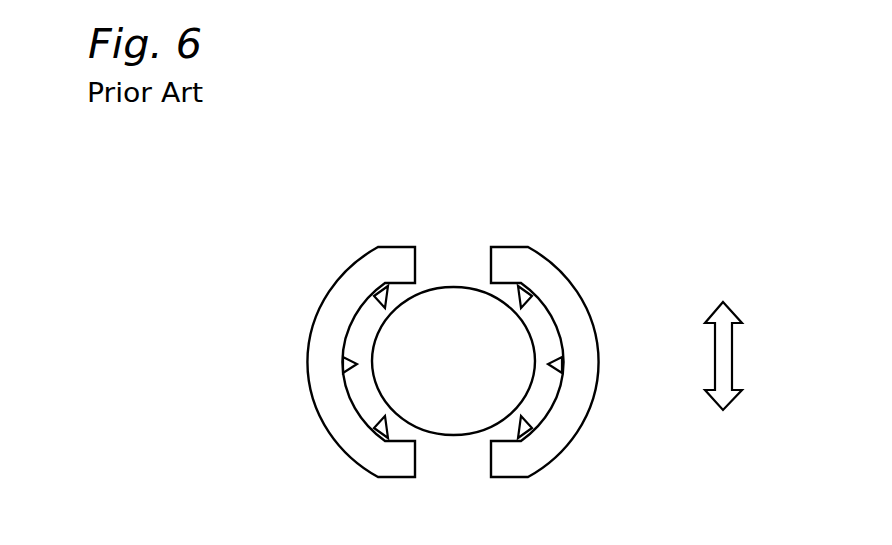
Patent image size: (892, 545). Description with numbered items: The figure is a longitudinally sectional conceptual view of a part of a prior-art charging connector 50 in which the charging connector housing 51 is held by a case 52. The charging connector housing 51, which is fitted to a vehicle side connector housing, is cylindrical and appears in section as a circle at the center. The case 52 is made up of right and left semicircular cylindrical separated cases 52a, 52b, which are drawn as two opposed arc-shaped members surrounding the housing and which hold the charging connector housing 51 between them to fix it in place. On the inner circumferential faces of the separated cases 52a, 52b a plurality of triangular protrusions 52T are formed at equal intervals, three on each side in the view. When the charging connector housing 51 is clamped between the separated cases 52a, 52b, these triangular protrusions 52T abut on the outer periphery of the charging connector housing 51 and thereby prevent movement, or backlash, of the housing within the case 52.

The charging connector 50 is at (614, 120).
The charging connector housing 51 is at (447, 303).
The case 52 is at (523, 152).
The separated case 52a is at (390, 256).
The separated case 52b is at (516, 256).
The triangular protrusions 52T is at (378, 294).